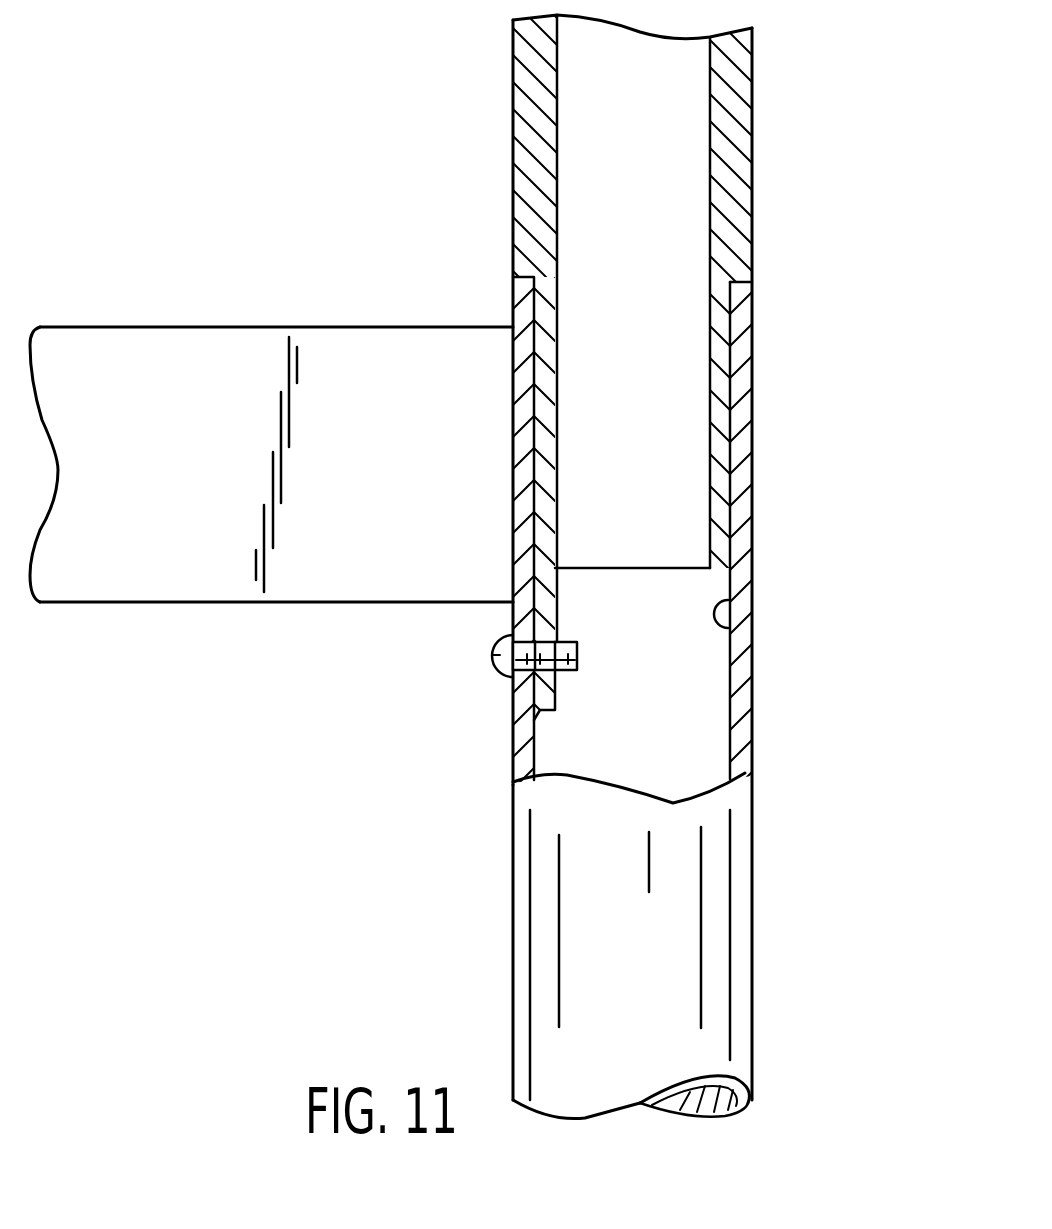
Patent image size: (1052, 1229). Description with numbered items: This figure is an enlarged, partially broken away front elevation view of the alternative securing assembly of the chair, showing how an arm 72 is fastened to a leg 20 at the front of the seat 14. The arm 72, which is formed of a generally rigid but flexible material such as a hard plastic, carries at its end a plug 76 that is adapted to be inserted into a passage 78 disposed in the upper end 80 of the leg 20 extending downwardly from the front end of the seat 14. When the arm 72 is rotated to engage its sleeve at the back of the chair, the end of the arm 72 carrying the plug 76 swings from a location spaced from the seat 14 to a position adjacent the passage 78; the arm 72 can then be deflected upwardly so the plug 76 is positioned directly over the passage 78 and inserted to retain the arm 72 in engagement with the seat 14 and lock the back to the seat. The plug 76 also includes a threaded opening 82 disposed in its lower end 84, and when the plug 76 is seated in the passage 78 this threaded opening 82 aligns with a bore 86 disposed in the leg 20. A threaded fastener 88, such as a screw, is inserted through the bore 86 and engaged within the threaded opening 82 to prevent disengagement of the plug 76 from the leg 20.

The seat section 14 is at (205, 324).
The leg 20 is at (507, 955).
The arm 72 is at (513, 118).
The plug 76 is at (713, 402).
The passage 78 is at (730, 623).
The upper end 80 is at (753, 281).
The threaded opening 82 is at (510, 620).
The lower end 84 is at (510, 743).
The bore 86 is at (507, 695).
The threaded fastener 88 is at (493, 653).